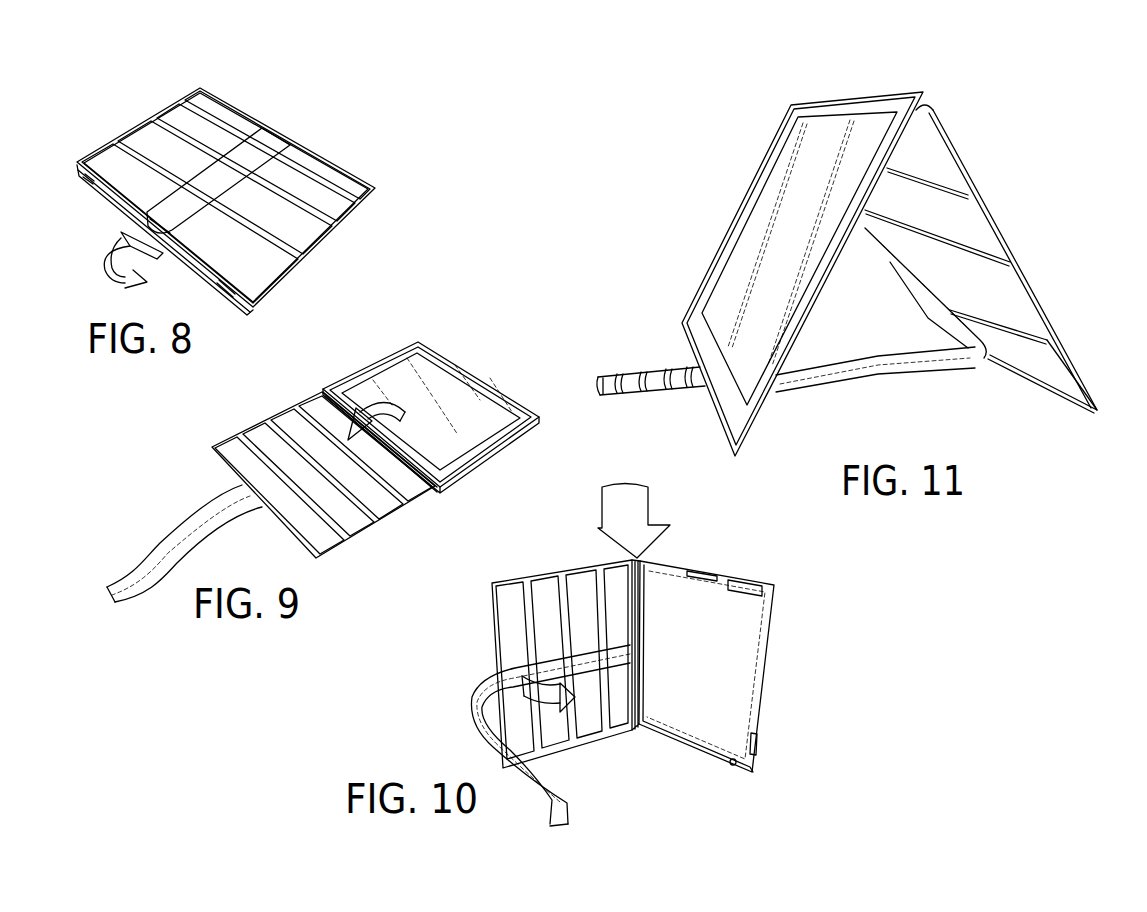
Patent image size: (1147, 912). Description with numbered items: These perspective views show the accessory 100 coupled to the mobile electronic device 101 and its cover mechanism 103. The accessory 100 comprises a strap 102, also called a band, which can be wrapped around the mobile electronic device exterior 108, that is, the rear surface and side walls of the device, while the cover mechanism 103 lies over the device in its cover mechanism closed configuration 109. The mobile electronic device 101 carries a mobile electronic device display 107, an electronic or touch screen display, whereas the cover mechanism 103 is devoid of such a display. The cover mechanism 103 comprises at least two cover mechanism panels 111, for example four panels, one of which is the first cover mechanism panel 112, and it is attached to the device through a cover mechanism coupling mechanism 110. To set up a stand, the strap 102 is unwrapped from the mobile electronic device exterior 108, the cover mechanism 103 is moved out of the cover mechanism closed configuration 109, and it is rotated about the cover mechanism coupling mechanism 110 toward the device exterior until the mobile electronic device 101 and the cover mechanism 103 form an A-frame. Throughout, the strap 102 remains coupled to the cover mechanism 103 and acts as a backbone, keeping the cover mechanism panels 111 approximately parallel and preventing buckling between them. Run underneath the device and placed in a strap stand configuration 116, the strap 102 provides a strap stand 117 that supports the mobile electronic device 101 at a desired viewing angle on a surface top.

In FIG. 8, the accessory 100 is at (342, 123).
In FIG. 9, the accessory 100 is at (513, 330).
In FIG. 10, the accessory 100 is at (730, 560).
In FIG. 11, the accessory 100 is at (985, 422).
In FIG. 8, the mobile electronic device 101 is at (315, 257).
In FIG. 9, the mobile electronic device 101 is at (512, 395).
In FIG. 10, the mobile electronic device 101 is at (752, 773).
In FIG. 11, the mobile electronic device 101 is at (740, 460).
In FIG. 8, the strap 102 is at (278, 130).
In FIG. 9, the strap 102 is at (172, 547).
In FIG. 10, the strap 102 is at (500, 755).
In FIG. 11, the strap 102 is at (878, 356).
In FIG. 8, the cover mechanism 103 is at (353, 192).
In FIG. 9, the cover mechanism 103 is at (347, 522).
In FIG. 10, the cover mechanism 103 is at (578, 588).
In FIG. 11, the cover mechanism 103 is at (1030, 319).
In FIG. 9, the mobile electronic device display 107 is at (445, 377).
In FIG. 10, the mobile electronic device display 107 is at (777, 630).
In FIG. 11, the mobile electronic device display 107 is at (786, 167).
In FIG. 9, the mobile electronic device exterior 108 is at (533, 437).
In FIG. 10, the mobile electronic device exterior 108 is at (703, 725).
In FIG. 11, the mobile electronic device exterior 108 is at (777, 387).
In FIG. 8, the cover mechanism closed configuration 109 is at (98, 138).
In FIG. 8, the cover mechanism coupling mechanism 110 is at (108, 198).
In FIG. 9, the cover mechanism coupling mechanism 110 is at (337, 390).
In FIG. 10, the cover mechanism coupling mechanism 110 is at (635, 708).
In FIG. 11, the cover mechanism coupling mechanism 110 is at (839, 92).
In FIG. 8, the cover mechanism panels 111 is at (312, 165).
In FIG. 9, the cover mechanism panels 111 is at (290, 425).
In FIG. 10, the cover mechanism panels 111 is at (548, 598).
In FIG. 11, the cover mechanism panels 111 is at (1035, 365).
In FIG. 8, the first cover mechanism panel 112 is at (250, 283).
In FIG. 9, the first cover mechanism panel 112 is at (407, 482).
In FIG. 10, the first cover mechanism panel 112 is at (622, 587).
In FIG. 11, the first cover mechanism panel 112 is at (936, 160).
In FIG. 11, the strap stand configuration 116 is at (695, 402).
In FIG. 11, the strap stand 117 is at (680, 358).